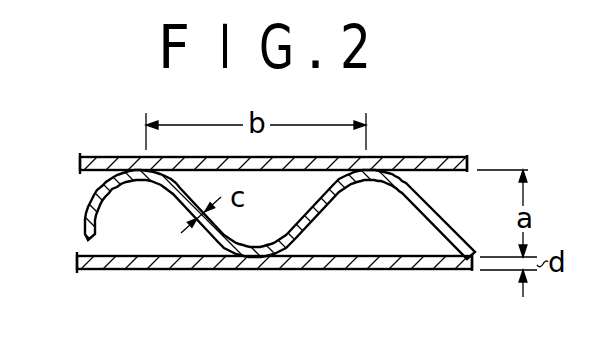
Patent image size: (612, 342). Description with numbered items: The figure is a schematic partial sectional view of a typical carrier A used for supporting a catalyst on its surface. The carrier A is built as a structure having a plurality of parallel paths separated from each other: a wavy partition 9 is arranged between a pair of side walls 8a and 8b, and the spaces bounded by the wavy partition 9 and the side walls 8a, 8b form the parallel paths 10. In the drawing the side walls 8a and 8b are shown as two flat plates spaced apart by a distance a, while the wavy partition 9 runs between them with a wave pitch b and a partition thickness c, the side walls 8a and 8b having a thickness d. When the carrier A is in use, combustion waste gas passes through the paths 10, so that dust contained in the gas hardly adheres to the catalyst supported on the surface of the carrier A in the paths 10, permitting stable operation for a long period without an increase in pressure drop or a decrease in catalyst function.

The side wall 8a is at (110, 156).
The side wall 8b is at (100, 270).
The wavy partition 9 is at (86, 203).
The parallel paths 10 is at (125, 222).
The carrier A is at (452, 143).